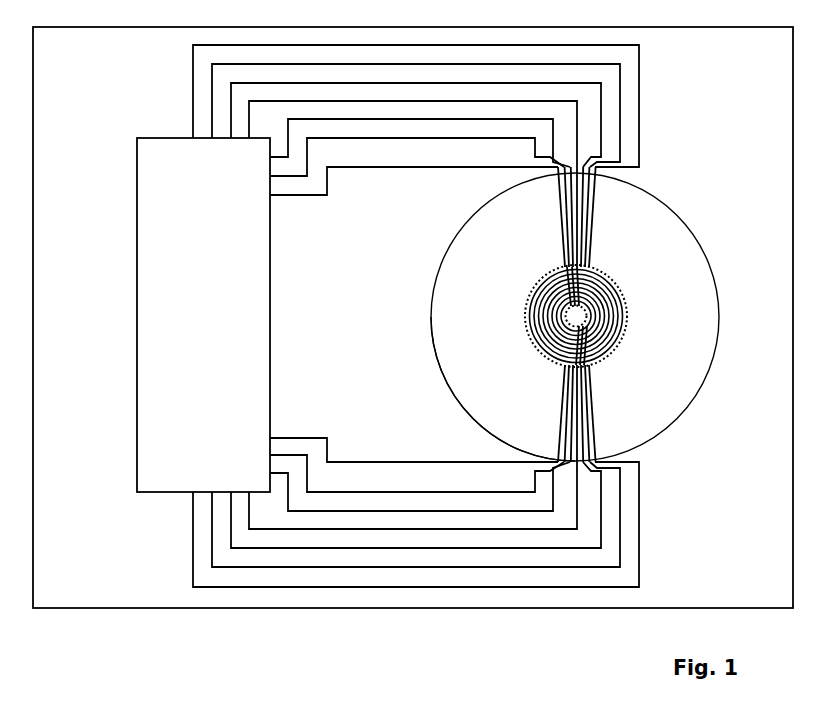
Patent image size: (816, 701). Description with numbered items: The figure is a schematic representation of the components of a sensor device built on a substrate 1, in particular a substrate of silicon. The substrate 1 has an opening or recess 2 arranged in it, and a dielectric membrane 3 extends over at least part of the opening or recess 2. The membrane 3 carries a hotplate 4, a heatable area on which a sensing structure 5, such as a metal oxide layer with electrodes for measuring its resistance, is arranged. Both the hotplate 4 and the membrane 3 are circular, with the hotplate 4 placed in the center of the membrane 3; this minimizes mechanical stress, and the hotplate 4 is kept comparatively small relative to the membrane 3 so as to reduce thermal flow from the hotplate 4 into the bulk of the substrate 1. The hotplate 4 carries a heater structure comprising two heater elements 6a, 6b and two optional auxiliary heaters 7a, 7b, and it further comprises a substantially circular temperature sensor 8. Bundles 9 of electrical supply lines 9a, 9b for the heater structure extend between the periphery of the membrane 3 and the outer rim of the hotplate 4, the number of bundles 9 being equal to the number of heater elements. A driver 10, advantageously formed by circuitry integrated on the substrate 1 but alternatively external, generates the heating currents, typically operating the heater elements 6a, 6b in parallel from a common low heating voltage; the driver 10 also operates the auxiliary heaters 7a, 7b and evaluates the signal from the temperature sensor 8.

The substrate 1 is at (152, 610).
The opening or recess 2 is at (698, 388).
The membrane 3 is at (703, 320).
The hotplate 4 is at (636, 276).
The sensing structure 5 is at (602, 268).
The heater element 6a is at (625, 297).
The heater element 6b is at (533, 348).
The auxiliary heater 7a is at (615, 353).
The auxiliary heater 7b is at (538, 278).
The temperature sensor 8 is at (530, 297).
The bundles 9 is at (610, 205).
The electrical supply line 9a is at (600, 224).
The electrical supply line 9b is at (560, 222).
The driver 10 is at (157, 153).